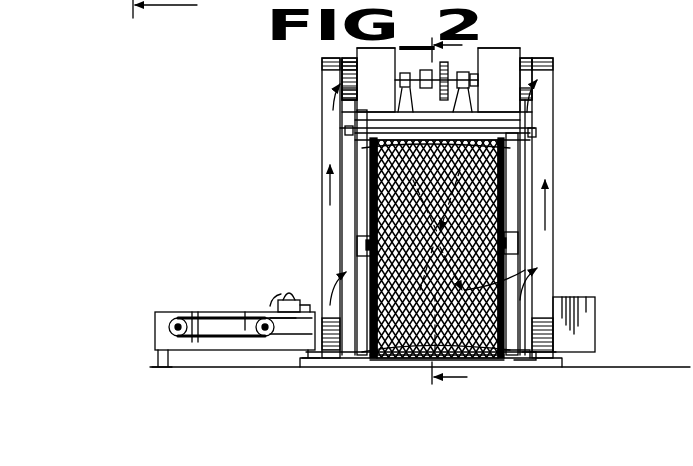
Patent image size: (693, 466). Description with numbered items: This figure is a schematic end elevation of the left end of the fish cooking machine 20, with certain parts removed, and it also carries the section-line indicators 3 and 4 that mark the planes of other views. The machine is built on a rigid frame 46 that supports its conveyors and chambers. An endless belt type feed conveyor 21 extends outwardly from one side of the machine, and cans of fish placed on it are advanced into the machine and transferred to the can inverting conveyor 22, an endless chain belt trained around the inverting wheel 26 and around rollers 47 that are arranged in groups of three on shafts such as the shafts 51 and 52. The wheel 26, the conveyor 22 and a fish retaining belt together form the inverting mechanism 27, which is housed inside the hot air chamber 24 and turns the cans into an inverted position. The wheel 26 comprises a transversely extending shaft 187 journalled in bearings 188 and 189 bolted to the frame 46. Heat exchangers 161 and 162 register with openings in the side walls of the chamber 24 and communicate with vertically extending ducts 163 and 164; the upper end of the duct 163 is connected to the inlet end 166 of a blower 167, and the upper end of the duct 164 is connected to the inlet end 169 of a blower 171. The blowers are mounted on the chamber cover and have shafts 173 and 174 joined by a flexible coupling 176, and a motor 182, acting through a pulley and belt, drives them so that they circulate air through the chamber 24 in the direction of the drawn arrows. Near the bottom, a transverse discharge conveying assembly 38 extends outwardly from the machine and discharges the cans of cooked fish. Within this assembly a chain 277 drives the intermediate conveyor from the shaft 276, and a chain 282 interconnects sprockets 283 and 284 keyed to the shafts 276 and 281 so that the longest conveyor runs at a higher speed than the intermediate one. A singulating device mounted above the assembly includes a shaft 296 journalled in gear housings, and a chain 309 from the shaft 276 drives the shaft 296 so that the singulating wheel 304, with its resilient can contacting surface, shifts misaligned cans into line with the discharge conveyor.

The section line 4- 4 is at (155, 9).
The section line 3- 3 is at (449, 211).
The fish cooking machine 20 is at (578, 58).
The feed conveyor 21 is at (575, 302).
The can inverting conveyor 22 is at (474, 249).
The hot air chamber 24 is at (512, 166).
The inverting wheel 26 is at (372, 236).
The inverting mechanism 27 is at (372, 220).
The transverse discharge conveying assembly 38 is at (208, 317).
The rigid frame 46 is at (343, 134).
The rollers 47 is at (436, 249).
The shaft 51 is at (358, 155).
The shaft 52 is at (538, 355).
The heat exchanger 161 is at (423, 261).
The heat exchanger 162 is at (515, 283).
The duct 163 is at (322, 118).
The duct 164 is at (556, 114).
The inlet end 166 is at (342, 70).
The blower 167 is at (357, 52).
The inlet end 169 is at (532, 74).
The blower 171 is at (520, 50).
The shaft 173 is at (395, 90).
The shaft 174 is at (506, 78).
The flexible coupling 176 is at (437, 120).
The motor 182 is at (408, 72).
The shaft 187 is at (374, 242).
The bearing 188 is at (357, 250).
The bearing 189 is at (512, 243).
The shaft 276 is at (264, 340).
The chain 277 is at (318, 350).
The shaft 281 is at (170, 328).
The chain 282 is at (220, 350).
The sprocket 283 is at (258, 312).
The sprocket 284 is at (194, 315).
The shaft 296 is at (286, 298).
The singulating wheel 304 is at (312, 296).
The chain 309 is at (270, 303).